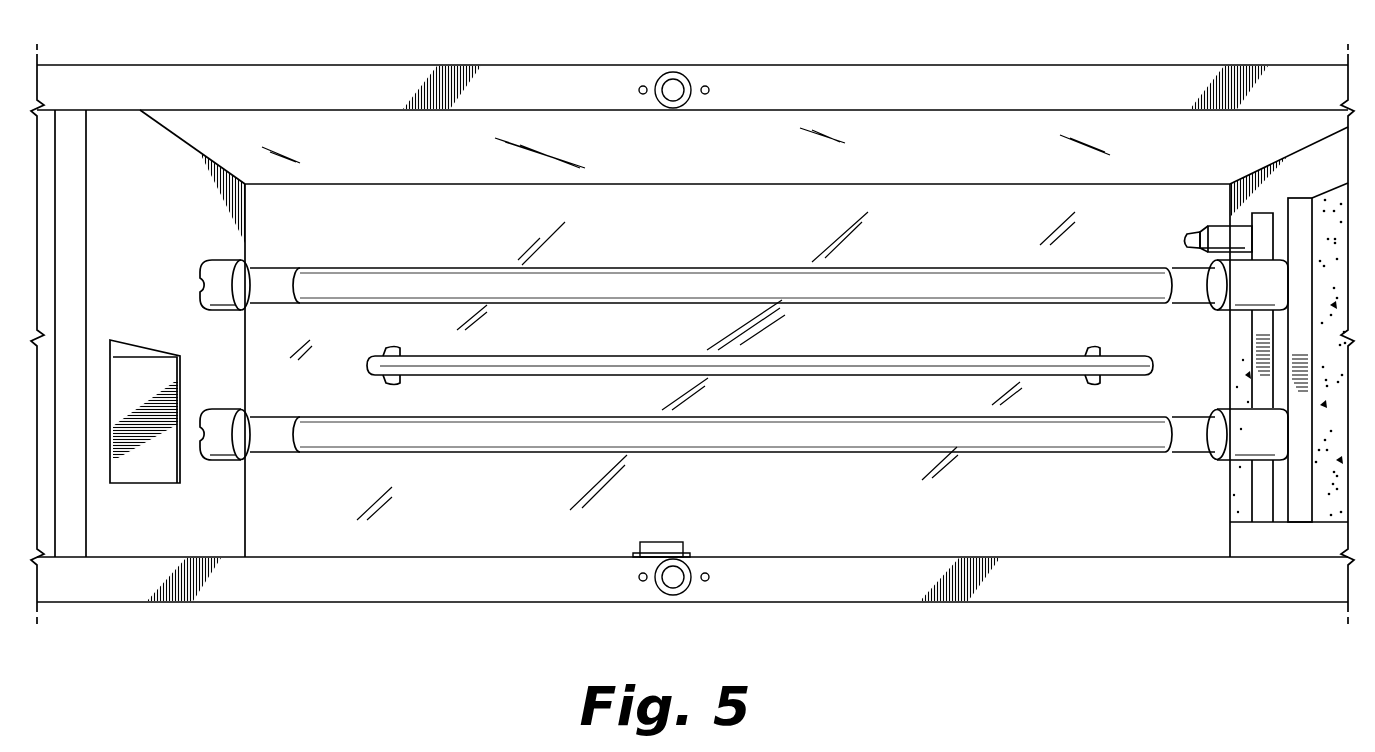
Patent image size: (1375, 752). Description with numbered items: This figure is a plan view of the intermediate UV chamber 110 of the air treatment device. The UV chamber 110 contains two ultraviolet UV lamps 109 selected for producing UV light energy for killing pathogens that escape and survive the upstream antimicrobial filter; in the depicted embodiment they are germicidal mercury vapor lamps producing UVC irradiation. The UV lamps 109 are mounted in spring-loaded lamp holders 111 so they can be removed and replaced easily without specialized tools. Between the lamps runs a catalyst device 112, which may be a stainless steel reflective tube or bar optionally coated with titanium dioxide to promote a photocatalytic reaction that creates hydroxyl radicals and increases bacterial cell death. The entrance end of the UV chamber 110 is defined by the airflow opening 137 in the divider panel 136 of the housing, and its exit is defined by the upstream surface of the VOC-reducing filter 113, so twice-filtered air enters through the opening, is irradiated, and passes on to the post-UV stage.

The UV lamps 109 is at (568, 310).
The UV chamber 110 is at (1048, 497).
The spring-loaded lamp holders 111 is at (1242, 300).
The catalyst devices 112 is at (824, 383).
The VOC-reducing filter 113 is at (1338, 458).
The divider panel 136 is at (160, 527).
The airflow opening 137 is at (140, 450).